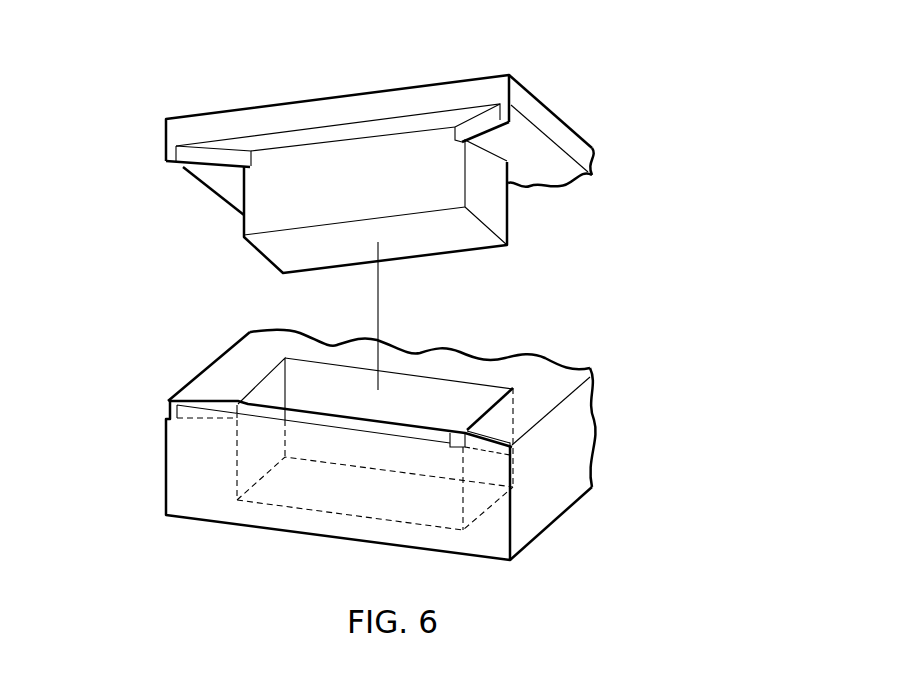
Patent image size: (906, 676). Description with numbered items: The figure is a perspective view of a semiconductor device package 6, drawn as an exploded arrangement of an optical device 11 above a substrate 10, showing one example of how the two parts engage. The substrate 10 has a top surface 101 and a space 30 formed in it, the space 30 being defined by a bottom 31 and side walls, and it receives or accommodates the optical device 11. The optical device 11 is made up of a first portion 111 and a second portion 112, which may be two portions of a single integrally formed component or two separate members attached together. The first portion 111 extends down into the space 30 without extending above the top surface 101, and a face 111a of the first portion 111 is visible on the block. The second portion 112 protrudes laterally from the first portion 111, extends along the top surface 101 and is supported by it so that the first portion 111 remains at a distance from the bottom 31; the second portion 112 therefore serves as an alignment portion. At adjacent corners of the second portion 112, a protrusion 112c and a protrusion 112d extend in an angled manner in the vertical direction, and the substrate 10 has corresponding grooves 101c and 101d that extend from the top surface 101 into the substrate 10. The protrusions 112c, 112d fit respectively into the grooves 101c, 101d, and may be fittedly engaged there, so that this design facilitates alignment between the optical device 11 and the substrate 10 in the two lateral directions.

The semiconductor device package 6 is at (717, 143).
The substrate 10 is at (603, 361).
The optical device 11 is at (560, 79).
The space 30 is at (425, 397).
The bottom 31 is at (417, 503).
The top surface 101 is at (223, 373).
The groove 101c is at (197, 410).
The groove 101d is at (513, 459).
The first portion 111 is at (494, 207).
The front face of protruding portion 111a is at (455, 238).
The second portion 112 is at (590, 148).
The protrusion 112c is at (183, 167).
The protrusion 112d is at (502, 122).